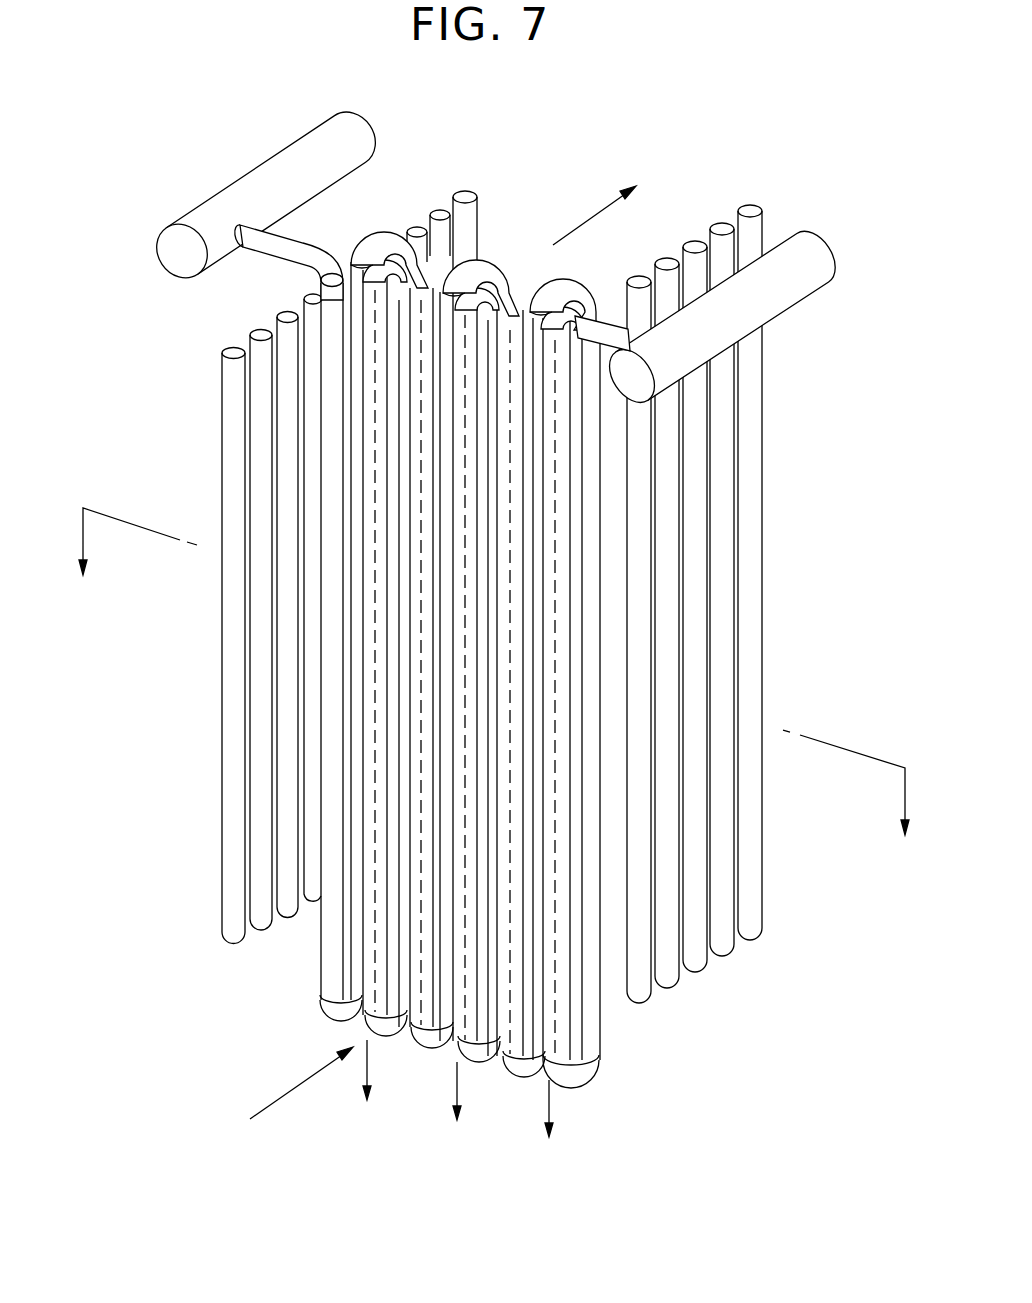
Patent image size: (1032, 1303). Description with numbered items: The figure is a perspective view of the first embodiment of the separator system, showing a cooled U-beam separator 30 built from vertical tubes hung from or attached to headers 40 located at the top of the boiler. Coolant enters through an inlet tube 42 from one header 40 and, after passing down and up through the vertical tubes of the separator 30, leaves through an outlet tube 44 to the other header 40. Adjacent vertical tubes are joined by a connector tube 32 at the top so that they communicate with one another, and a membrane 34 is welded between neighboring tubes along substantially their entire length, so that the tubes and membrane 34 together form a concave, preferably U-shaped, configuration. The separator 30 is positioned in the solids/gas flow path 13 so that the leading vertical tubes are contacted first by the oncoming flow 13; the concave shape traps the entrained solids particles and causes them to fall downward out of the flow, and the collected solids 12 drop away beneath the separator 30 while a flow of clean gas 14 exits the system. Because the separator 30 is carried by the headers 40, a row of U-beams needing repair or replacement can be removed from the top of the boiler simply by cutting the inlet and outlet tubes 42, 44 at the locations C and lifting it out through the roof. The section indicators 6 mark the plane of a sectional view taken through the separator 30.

The header 40 is at (218, 205).
The inlet tube 42 is at (278, 243).
The outlet tube 44 is at (608, 318).
The connector tube 32 is at (378, 240).
The membrane 34 is at (580, 1037).
The separator 30 is at (333, 922).
The clean gas flow 14 is at (578, 223).
The solids/gas flow path 13 is at (295, 1087).
The solids 12 is at (550, 1110).
The section line 6- 6 is at (495, 690).
The cutting location C is at (303, 238).